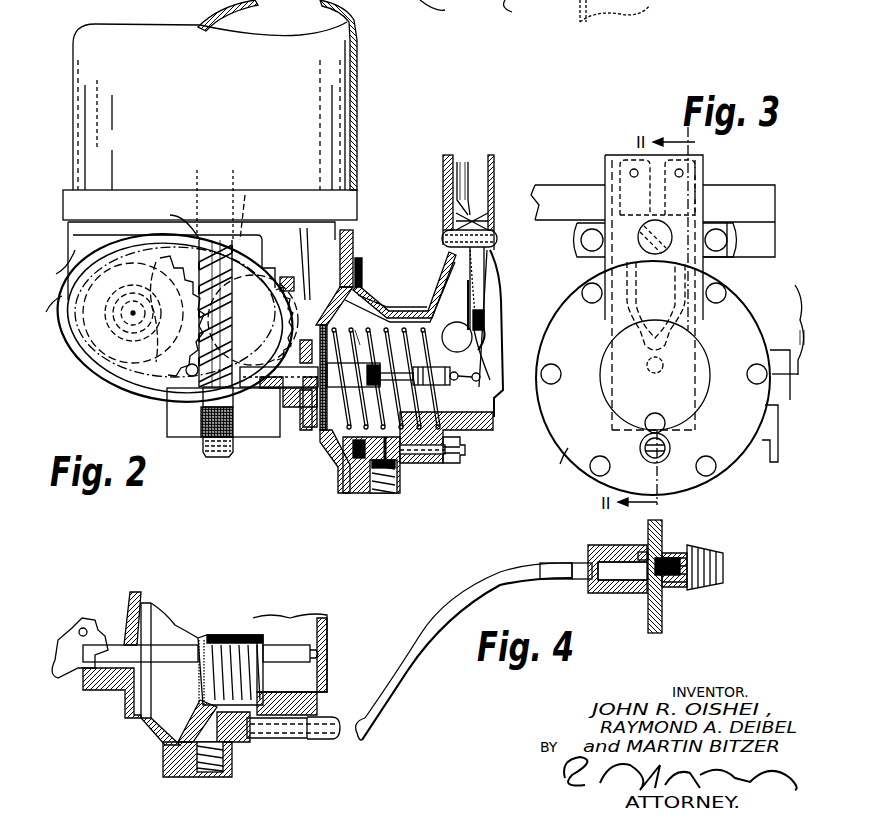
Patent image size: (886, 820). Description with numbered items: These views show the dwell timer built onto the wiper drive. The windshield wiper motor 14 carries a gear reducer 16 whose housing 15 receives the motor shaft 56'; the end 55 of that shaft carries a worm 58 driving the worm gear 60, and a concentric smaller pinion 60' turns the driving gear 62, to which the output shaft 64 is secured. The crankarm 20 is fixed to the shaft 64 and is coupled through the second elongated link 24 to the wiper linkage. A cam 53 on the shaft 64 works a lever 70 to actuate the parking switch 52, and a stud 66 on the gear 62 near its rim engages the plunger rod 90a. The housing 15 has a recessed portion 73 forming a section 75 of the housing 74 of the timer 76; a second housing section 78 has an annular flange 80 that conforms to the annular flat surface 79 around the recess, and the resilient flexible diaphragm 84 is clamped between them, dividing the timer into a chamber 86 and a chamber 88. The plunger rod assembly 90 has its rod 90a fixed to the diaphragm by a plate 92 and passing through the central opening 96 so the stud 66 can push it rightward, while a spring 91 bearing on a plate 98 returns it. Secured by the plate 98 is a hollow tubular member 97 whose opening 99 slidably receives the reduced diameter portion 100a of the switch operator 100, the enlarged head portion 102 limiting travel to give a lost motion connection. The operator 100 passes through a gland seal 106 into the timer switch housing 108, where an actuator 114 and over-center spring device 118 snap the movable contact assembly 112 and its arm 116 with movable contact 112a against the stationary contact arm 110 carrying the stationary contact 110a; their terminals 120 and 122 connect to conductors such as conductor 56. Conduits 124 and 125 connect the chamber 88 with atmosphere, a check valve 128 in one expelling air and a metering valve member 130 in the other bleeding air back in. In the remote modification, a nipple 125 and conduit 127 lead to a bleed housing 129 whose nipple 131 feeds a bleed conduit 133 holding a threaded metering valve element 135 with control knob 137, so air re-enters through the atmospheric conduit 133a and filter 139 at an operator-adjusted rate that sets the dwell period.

In FIG. 2, the windshield wiper motor 14 is at (241, 94).
In FIG. 2, the housing 15 is at (49, 305).
In FIG. 3, the housing 15 is at (552, 466).
In FIG. 2, the gear reducer 16 is at (70, 358).
In FIG. 3, the gear reducer 16 is at (578, 414).
In FIG. 2, the crankarm 20 is at (444, 11).
In FIG. 2, the second elongated link 24 is at (519, 11).
In FIG. 2, the parking switch 52 is at (290, 272).
In FIG. 2, the cam 53 is at (233, 278).
In FIG. 2, the end of motor shaft 55 is at (230, 240).
In FIG. 3, the conductor 56 is at (788, 310).
In FIG. 2, the motor shaft 56' is at (195, 202).
In FIG. 2, the worm 58 is at (170, 221).
In FIG. 2, the worm gear 60 is at (133, 309).
In FIG. 2, the pinion 60' is at (52, 266).
In FIG. 2, the driving gear 62 is at (278, 342).
In FIG. 2, the output shaft 64 is at (219, 323).
In FIG. 2, the projection or stud 66 is at (186, 377).
In FIG. 2, the lever 70 is at (255, 205).
In FIG. 2, the recessed portion 73 is at (372, 300).
In FIG. 2, the housing of timer 74 is at (388, 305).
In FIG. 2, the section of housing 75 is at (326, 450).
In FIG. 2, the timer 76 is at (372, 292).
In FIG. 2, the second housing section 78 is at (405, 312).
In FIG. 2, the annular flat surface 79 is at (360, 262).
In FIG. 2, the annular flange 80 is at (366, 270).
In FIG. 2, the resilient flexible diaphragm 84 is at (345, 493).
In FIG. 2, the chamber 86 is at (315, 440).
In FIG. 2, the chamber 88 is at (374, 445).
In FIG. 2, the plunger rod assembly 90 is at (290, 405).
In FIG. 2, the plunger rod 90a is at (279, 377).
In FIG. 2, the spring 91 is at (432, 462).
In FIG. 4, the spring 91 is at (257, 635).
In FIG. 2, the plate 92 is at (333, 310).
In FIG. 2, the central opening 96 is at (300, 430).
In FIG. 2, the hollow tubular rod-like member 97 is at (367, 327).
In FIG. 2, the plate 98 is at (335, 470).
In FIG. 2, the opening 99 is at (336, 455).
In FIG. 4, the opening 99 is at (270, 640).
In FIG. 2, the plunger rod or switch operator 100 is at (446, 376).
In FIG. 2, the reduced diameter portion 100a is at (390, 493).
In FIG. 2, the enlarged head portion 102 is at (365, 376).
In FIG. 2, the gland seal 106 is at (478, 305).
In FIG. 2, the timer switch housing 108 is at (503, 345).
In FIG. 2, the stationary contact arm 110 is at (488, 270).
In FIG. 2, the stationary contact 110a is at (485, 290).
In FIG. 2, the movable contact assembly 112 is at (492, 275).
In FIG. 2, the movable contact 112a is at (530, 275).
In FIG. 2, the movable contact arm actuator 114 is at (495, 325).
In FIG. 3, the movable contact arm actuator 114 is at (665, 357).
In FIG. 2, the movable contact arm 116 is at (486, 320).
In FIG. 2, the over-center spring device 118 is at (462, 299).
In FIG. 2, the terminal 120 is at (484, 158).
In FIG. 3, the terminal 120 is at (704, 172).
In FIG. 2, the terminal 122 is at (452, 162).
In FIG. 3, the terminal 122 is at (628, 162).
In FIG. 2, the conduit 124 is at (418, 462).
In FIG. 4, the conduit 124 is at (240, 738).
In FIG. 2, the conduit / nipple 125 is at (385, 493).
In FIG. 4, the conduit / nipple 125 is at (328, 715).
In FIG. 4, the conduit 127 is at (430, 675).
In FIG. 2, the check valve 128 is at (405, 480).
In FIG. 4, the bleed housing 129 is at (610, 595).
In FIG. 2, the metering valve member 130 is at (466, 450).
In FIG. 4, the nipple 131 is at (568, 562).
In FIG. 4, the bleed conduit 133 is at (625, 560).
In FIG. 4, the atmospheric conduit 133a is at (645, 552).
In FIG. 4, the metering valve element 135 is at (668, 590).
In FIG. 4, the control knob 137 is at (700, 555).
In FIG. 4, the filter 139 is at (650, 600).